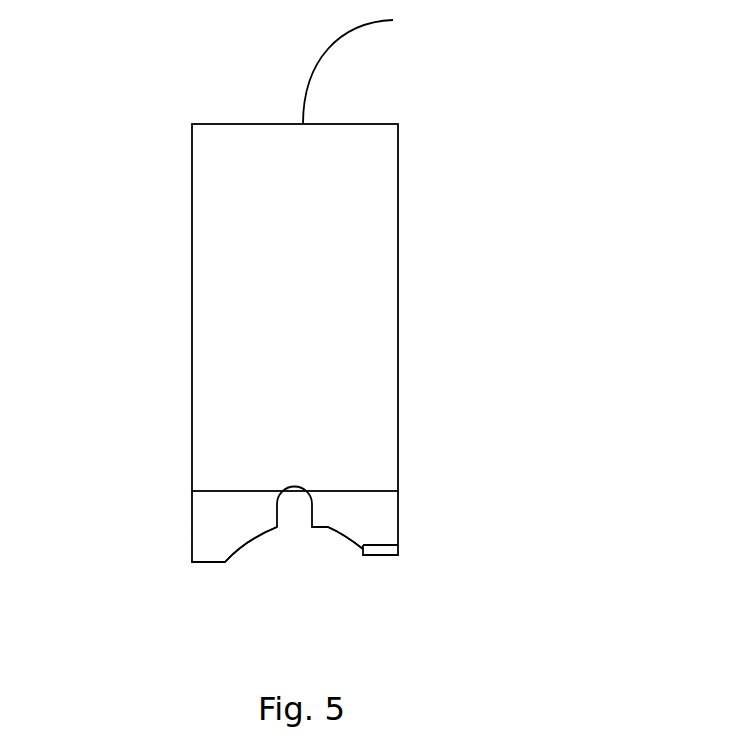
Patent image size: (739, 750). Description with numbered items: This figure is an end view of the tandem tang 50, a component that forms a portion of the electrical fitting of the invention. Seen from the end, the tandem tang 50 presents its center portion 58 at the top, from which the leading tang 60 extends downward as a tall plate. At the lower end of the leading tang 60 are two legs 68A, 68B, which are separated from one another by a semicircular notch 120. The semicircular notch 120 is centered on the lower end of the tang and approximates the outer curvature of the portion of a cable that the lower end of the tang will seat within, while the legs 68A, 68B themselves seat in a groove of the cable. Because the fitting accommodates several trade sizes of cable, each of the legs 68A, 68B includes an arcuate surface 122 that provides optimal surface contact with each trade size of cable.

The tandem tang 50 is at (113, 206).
The center portion 58 is at (364, 67).
The leading tang 60 is at (305, 320).
The leg 68A is at (248, 528).
The leg 68B is at (382, 524).
The semicircular notch 120 is at (294, 505).
The arcuate surface 122 is at (249, 542).